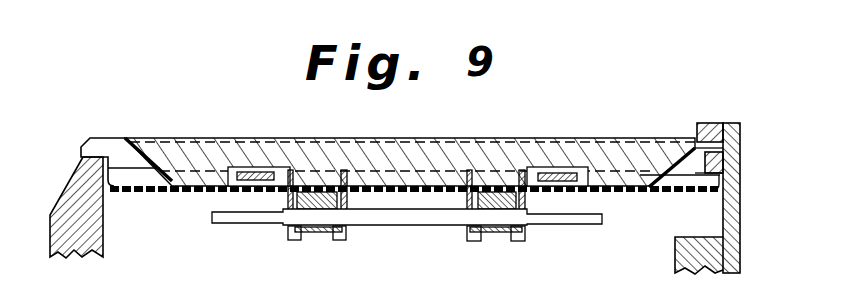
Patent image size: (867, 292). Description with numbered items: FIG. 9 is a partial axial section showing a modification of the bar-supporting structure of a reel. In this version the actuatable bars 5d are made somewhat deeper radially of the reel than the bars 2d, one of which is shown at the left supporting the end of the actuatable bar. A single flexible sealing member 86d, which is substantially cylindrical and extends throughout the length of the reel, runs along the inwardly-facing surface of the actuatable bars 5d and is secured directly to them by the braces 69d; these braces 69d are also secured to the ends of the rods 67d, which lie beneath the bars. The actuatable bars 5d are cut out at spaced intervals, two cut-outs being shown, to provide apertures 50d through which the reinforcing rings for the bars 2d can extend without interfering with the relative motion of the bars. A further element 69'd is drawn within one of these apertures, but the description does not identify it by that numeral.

The bars 2d is at (108, 152).
The actuatable bars 5d is at (336, 145).
The guide insert 69'd is at (557, 146).
The apertures 50d is at (580, 181).
The flexible sealing member 86d is at (196, 188).
The braces 69d is at (528, 202).
The rods 67d is at (385, 215).